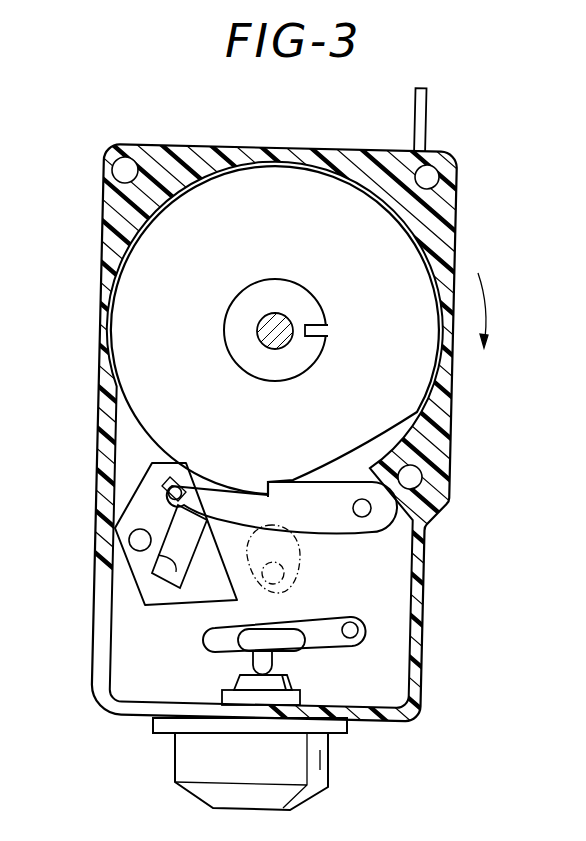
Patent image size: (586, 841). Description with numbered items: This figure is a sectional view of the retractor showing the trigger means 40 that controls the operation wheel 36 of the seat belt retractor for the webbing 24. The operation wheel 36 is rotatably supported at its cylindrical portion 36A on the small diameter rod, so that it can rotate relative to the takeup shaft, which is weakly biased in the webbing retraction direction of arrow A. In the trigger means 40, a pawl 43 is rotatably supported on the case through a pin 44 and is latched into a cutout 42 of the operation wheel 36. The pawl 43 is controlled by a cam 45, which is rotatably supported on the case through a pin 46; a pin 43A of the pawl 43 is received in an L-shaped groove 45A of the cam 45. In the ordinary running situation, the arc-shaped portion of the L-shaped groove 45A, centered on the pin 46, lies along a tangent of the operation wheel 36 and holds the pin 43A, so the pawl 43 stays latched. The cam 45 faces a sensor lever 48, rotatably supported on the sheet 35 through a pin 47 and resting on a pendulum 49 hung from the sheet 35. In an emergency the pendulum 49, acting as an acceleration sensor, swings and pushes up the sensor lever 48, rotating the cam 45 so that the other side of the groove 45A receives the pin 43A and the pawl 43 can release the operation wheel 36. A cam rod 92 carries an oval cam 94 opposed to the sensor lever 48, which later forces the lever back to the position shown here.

The webbing 24 is at (422, 121).
The sheet 35 is at (397, 582).
The operation wheel 36 is at (130, 351).
The cylindrical portion 36A is at (316, 310).
The trigger means 40 is at (246, 482).
The cutout 42 is at (272, 486).
The pawl 43 is at (328, 518).
The pin of the pawl 43A is at (168, 498).
The pin 44 is at (366, 514).
The cam 45 is at (164, 596).
The L-shaped groove 45A is at (176, 566).
The pin 46 is at (136, 542).
The pin 47 is at (356, 623).
The sensor lever 48 is at (330, 620).
The pendulum 49 is at (283, 683).
The cam rod 92 is at (277, 585).
The oval cam 94 is at (300, 560).
The direction of webbing retraction A is at (489, 312).